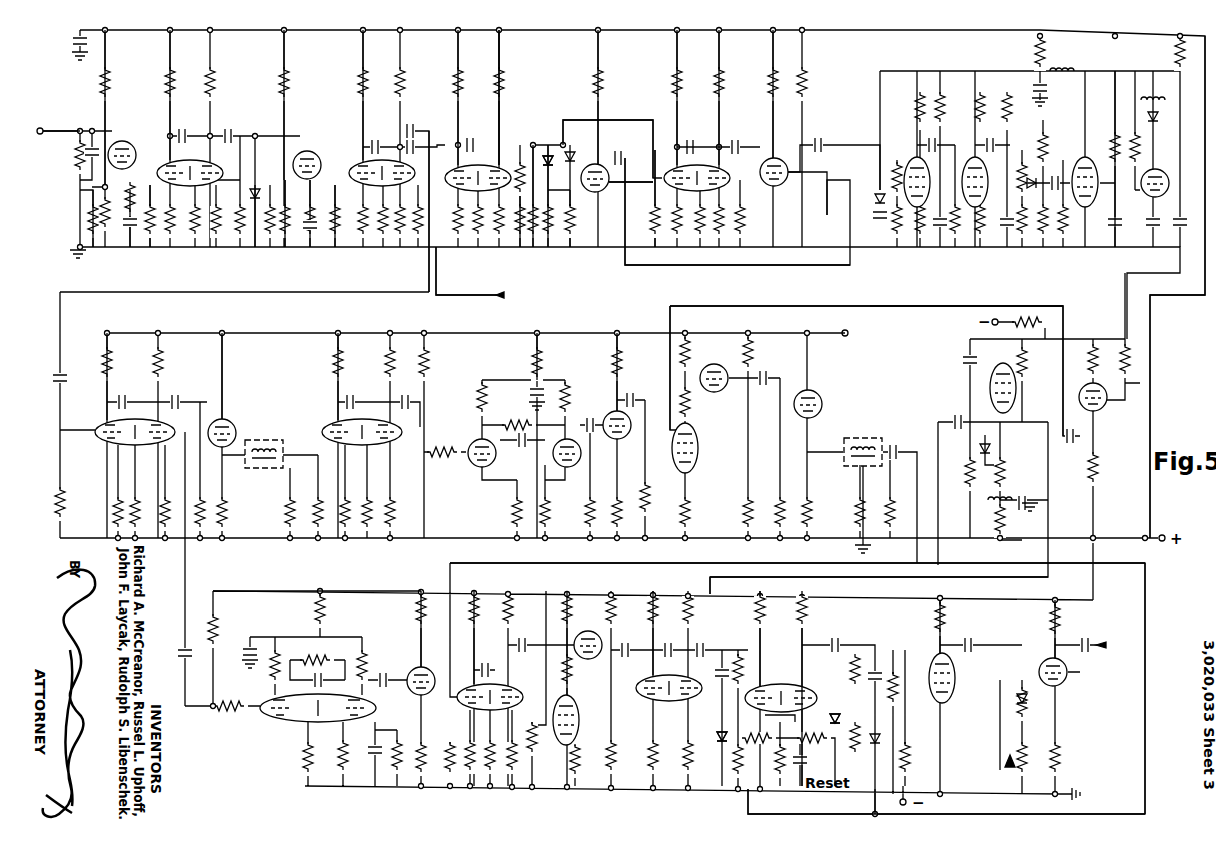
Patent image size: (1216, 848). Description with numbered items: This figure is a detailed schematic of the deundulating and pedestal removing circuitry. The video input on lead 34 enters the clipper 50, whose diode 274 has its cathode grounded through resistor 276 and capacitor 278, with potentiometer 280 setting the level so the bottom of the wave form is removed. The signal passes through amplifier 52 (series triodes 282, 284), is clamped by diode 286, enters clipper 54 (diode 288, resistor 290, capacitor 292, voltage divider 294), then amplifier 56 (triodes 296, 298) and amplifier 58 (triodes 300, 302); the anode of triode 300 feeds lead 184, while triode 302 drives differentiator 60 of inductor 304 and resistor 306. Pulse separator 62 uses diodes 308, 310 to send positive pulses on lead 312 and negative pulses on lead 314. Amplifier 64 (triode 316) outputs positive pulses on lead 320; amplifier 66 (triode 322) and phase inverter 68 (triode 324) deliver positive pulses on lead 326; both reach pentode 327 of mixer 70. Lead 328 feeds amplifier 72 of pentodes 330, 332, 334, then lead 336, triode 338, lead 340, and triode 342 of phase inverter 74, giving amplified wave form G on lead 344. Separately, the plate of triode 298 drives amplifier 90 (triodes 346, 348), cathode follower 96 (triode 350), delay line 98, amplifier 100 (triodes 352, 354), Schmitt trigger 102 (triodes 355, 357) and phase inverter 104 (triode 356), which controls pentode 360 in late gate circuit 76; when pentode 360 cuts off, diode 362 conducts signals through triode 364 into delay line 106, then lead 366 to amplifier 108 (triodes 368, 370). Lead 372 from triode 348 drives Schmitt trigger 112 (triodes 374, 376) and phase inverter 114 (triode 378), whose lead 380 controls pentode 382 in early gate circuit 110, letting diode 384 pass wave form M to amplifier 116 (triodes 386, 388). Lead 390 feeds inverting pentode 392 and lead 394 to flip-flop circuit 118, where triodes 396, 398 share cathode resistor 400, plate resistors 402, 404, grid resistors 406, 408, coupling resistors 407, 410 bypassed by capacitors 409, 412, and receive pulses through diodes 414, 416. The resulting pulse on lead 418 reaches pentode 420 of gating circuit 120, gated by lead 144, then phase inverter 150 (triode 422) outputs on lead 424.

The lead 34 is at (70, 131).
The clipper 50 is at (143, 50).
The amplifier 52 is at (200, 50).
The clipper 54 is at (328, 50).
The amplifier 56 is at (395, 50).
The amplifier 58 is at (489, 50).
The differentiator 60 is at (530, 50).
The pulse separator circuit 62 is at (587, 50).
The amplifier 64 is at (628, 50).
The amplifier 66 is at (708, 50).
The phase inverter 68 is at (752, 50).
The mixer 70 is at (800, 50).
The amplifier 72 is at (993, 56).
The phase inverter 74 is at (1103, 330).
The late gate circuit 76 is at (700, 330).
The amplifier 90 is at (145, 320).
The cathode follower 96 is at (235, 320).
The delay line 98 is at (295, 320).
The amplifier 100 is at (402, 320).
The Schmitt trigger 102 is at (554, 323).
The phase inverter 104 is at (618, 362).
The delay line 106 is at (846, 438).
The amplifier 108 is at (511, 583).
The early gate circuit 110 is at (581, 583).
The Schmitt trigger 112 is at (334, 581).
The phase inverter 114 is at (438, 583).
The amplifier 116 is at (701, 583).
The flip-flop circuit 118 is at (793, 591).
The gating circuit 120 is at (956, 595).
The lead 144 is at (998, 743).
The phase inverter 150 is at (1066, 595).
The lead 184 is at (438, 267).
The diode 274 is at (130, 141).
The resistor 276 is at (150, 245).
The capacitor 278 is at (135, 233).
The potentiometer 280 is at (105, 236).
The triode tube 282 is at (163, 160).
The triode tube 284 is at (222, 136).
The diode 286 is at (255, 242).
The diode 288 is at (312, 150).
The resistor 290 is at (338, 233).
The capacitor 292 is at (310, 233).
The voltage divider 294 is at (285, 235).
The triode 296 is at (356, 162).
The triode 298 is at (406, 131).
The triode 300 is at (450, 163).
The triode 302 is at (489, 165).
The inductor 304 is at (533, 236).
The resistor 306 is at (520, 145).
The diode 308 is at (552, 158).
The diode 310 is at (575, 160).
The lead 312 is at (607, 124).
The lead 314 is at (579, 198).
The triode tube 316 is at (610, 184).
The lead 320 is at (738, 265).
The triode tube 322 is at (678, 195).
The triode 324 is at (710, 158).
The lead 326 is at (757, 156).
The pentode tube 327 is at (800, 170).
The lead 328 is at (830, 145).
The pentode 330 is at (906, 170).
The pentode 332 is at (967, 155).
The pentode 334 is at (1072, 163).
The lead 336 is at (1117, 84).
The triode 338 is at (1155, 197).
The lead 340 is at (1172, 290).
The triode 342 is at (1103, 404).
The lead 344 is at (886, 306).
The triode 346 is at (104, 422).
The triode 348 is at (151, 415).
The triode 350 is at (224, 418).
The triode 352 is at (334, 422).
The triode 354 is at (433, 461).
The triode 355 is at (482, 468).
The triode 356 is at (608, 415).
The triode 357 is at (578, 467).
The pentode 360 is at (692, 428).
The diode 362 is at (718, 364).
The triode 364 is at (818, 394).
The lead 366 is at (646, 566).
The triode 368 is at (464, 790).
The triode 370 is at (520, 788).
The lead 372 is at (188, 562).
The triode 374 is at (261, 704).
The triode 376 is at (377, 680).
The triode 378 is at (417, 668).
The lead 380 is at (514, 645).
The pentode 382 is at (586, 755).
The diode 384 is at (586, 631).
The triode 386 is at (655, 675).
The triode 388 is at (710, 590).
The lead 390 is at (866, 576).
The pentode 392 is at (987, 386).
The lead 394 is at (1146, 770).
The triode 396 is at (768, 686).
The triode 398 is at (800, 686).
The resistor 400 is at (778, 775).
The resistor 402 is at (806, 606).
The resistor 404 is at (762, 619).
The resistor 406 is at (734, 792).
The resistor 407 is at (740, 660).
The resistor 408 is at (851, 795).
The capacitor 409 is at (723, 660).
The resistor 410 is at (875, 665).
The capacitor 412 is at (893, 670).
The diode 414 is at (718, 750).
The diode 416 is at (900, 756).
The lead 418 is at (856, 639).
The pentode 420 is at (956, 664).
The triode 422 is at (1068, 680).
The lead 424 is at (1065, 645).